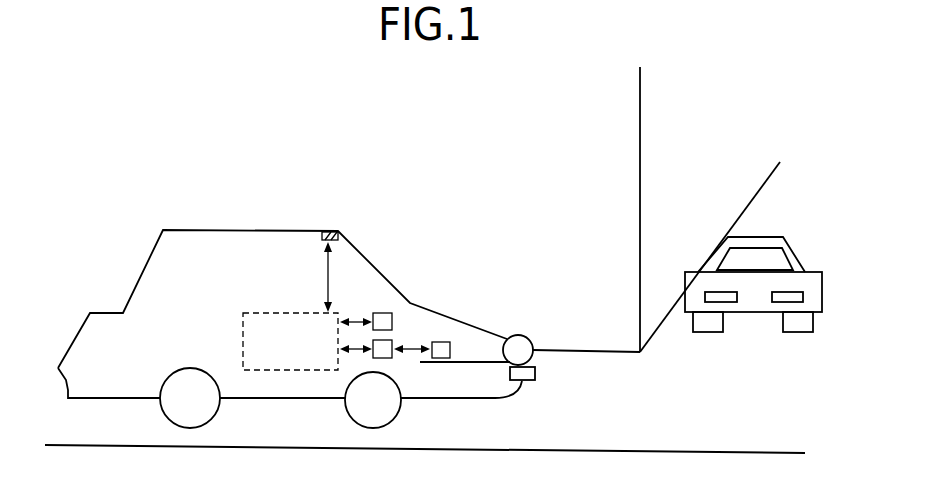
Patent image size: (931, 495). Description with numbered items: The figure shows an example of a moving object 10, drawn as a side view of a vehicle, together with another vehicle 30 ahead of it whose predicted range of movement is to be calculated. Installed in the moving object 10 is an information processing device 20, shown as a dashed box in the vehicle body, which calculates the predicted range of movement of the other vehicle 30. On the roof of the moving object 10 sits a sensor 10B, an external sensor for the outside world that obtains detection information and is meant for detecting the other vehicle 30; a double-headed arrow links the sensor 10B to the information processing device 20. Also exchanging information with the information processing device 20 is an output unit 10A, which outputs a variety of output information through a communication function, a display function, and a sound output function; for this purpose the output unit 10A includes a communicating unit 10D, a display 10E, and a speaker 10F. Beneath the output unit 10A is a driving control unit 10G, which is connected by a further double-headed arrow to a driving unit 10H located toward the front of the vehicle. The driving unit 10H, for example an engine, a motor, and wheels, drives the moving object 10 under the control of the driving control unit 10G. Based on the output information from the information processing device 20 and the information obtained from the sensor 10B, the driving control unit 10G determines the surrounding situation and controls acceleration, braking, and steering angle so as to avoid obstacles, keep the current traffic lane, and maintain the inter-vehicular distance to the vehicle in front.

The moving object 10 is at (217, 205).
The output unit 10A is at (490, 266).
The sensor 10B is at (332, 231).
The communicating unit 10D is at (382, 321).
The display 10E is at (382, 321).
The speaker 10F is at (400, 316).
The driving control unit 10G is at (380, 358).
The driving unit 10H is at (447, 358).
The information processing device 20 is at (292, 372).
The another vehicle 30 is at (750, 233).